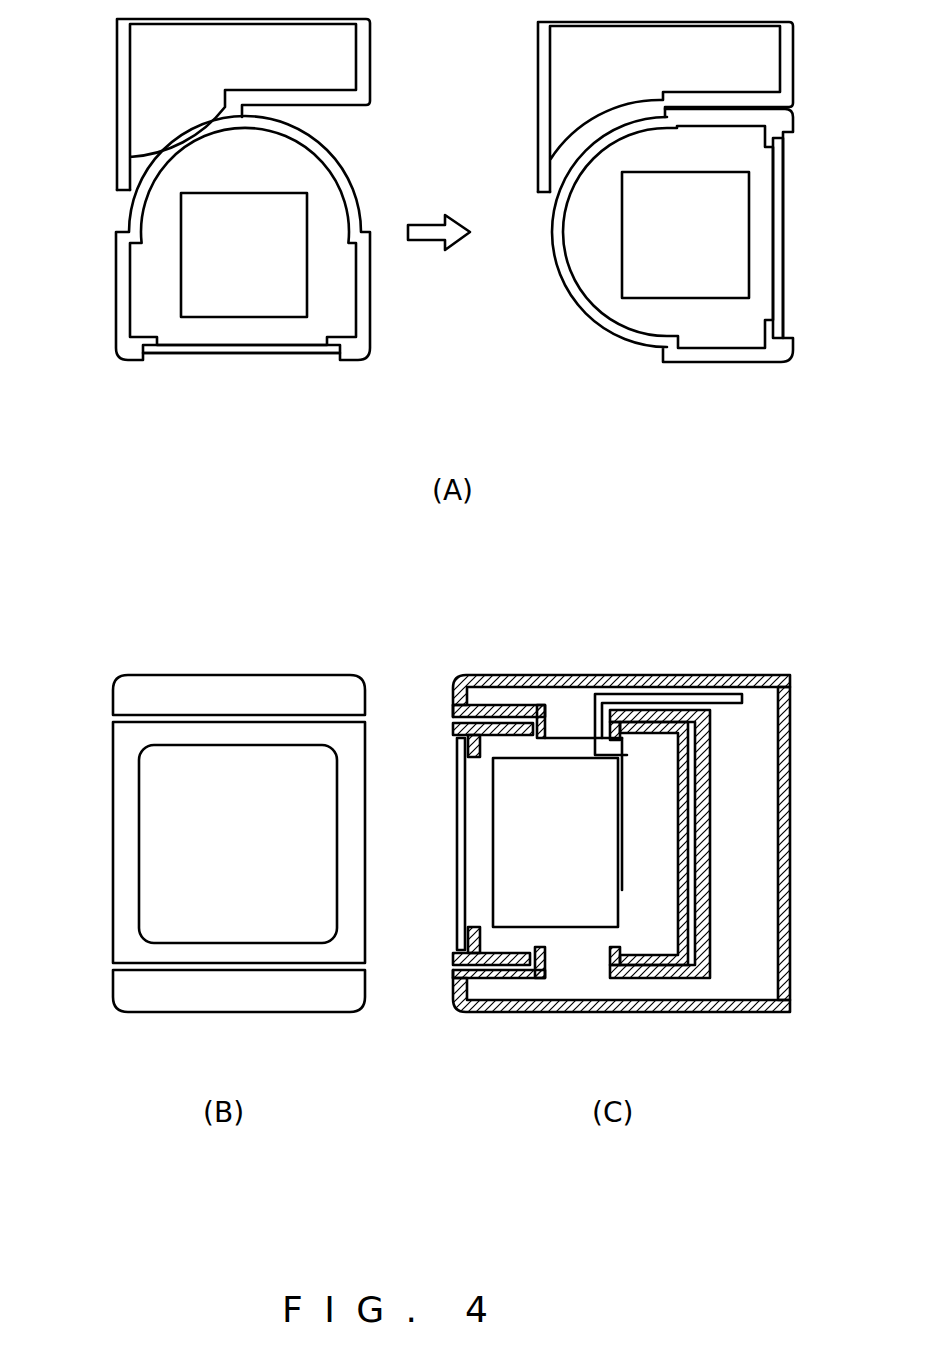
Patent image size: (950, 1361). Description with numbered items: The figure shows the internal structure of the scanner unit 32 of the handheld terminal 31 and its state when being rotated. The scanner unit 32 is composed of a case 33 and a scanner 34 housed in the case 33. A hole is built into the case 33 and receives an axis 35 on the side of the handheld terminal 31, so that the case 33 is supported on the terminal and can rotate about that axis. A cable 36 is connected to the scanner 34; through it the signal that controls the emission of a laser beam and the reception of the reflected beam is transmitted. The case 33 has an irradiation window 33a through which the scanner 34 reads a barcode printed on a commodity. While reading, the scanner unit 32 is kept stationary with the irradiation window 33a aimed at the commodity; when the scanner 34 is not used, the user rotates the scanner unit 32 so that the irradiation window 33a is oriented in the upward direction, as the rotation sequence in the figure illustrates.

The handheld terminal 31 is at (667, 669).
The scanner unit 32 is at (365, 173).
The case 33 is at (116, 247).
The irradiation window 33a is at (298, 353).
The scanner 34 is at (229, 193).
The axis 35 is at (537, 733).
The cable 36 is at (742, 699).